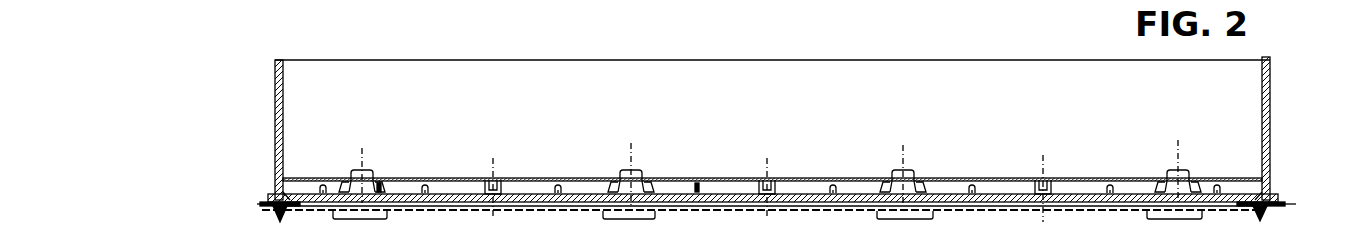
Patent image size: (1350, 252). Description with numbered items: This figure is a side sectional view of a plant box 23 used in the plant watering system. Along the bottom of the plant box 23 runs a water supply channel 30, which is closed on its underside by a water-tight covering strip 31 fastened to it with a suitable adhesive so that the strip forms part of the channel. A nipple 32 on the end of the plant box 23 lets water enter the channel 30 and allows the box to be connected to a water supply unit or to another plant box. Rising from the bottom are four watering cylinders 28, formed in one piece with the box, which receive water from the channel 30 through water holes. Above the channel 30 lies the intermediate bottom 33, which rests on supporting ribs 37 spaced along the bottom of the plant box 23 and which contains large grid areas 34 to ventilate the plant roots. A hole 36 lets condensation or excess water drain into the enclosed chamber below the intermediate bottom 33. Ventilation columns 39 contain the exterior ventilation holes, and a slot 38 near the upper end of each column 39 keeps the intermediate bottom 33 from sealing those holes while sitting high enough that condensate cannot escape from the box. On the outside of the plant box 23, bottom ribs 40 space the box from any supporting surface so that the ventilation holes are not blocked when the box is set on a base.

The plant box 23 is at (598, 60).
The watering cylinder 28 is at (1185, 178).
The water supply channel 30 is at (712, 204).
The water-tight covering strip 31 is at (787, 211).
The nipple 32 is at (1282, 206).
The intermediate bottom 33 is at (648, 180).
The grid area 34 is at (985, 179).
The hole 36 is at (915, 183).
The supporting rib 37 is at (378, 183).
The slot 38 is at (491, 185).
The ventilation column 39 is at (500, 188).
The bottom rib 40 is at (385, 219).